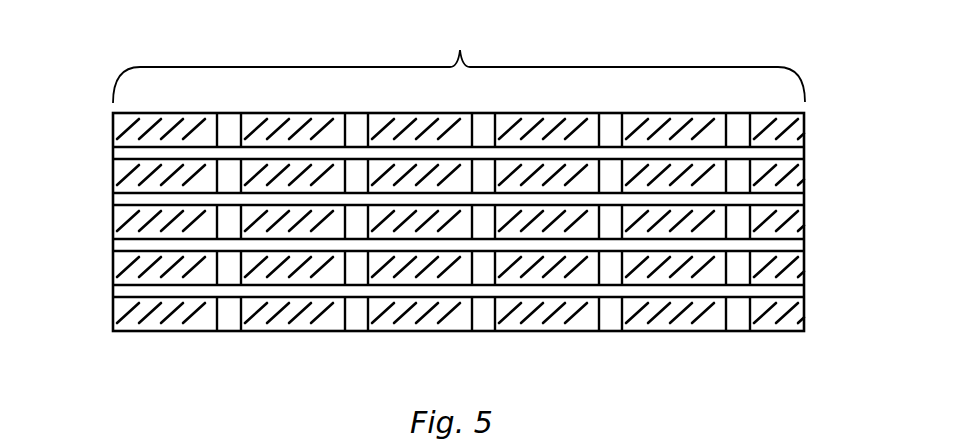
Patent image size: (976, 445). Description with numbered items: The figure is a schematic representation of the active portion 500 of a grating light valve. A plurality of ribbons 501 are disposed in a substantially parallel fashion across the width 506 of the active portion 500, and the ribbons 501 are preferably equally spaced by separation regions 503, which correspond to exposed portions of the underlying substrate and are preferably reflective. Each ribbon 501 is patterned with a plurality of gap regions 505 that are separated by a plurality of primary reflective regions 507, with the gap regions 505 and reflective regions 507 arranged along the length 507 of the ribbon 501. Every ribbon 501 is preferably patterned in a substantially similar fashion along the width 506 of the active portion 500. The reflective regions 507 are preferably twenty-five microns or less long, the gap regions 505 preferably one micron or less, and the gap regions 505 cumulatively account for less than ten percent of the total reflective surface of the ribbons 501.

The active portion 500 is at (140, 60).
The ribbon 501 is at (113, 120).
The separation region 503 is at (113, 152).
The gap region 505 is at (229, 318).
The width of the active portion 506 is at (817, 113).
The primary reflective region 507 is at (708, 362).